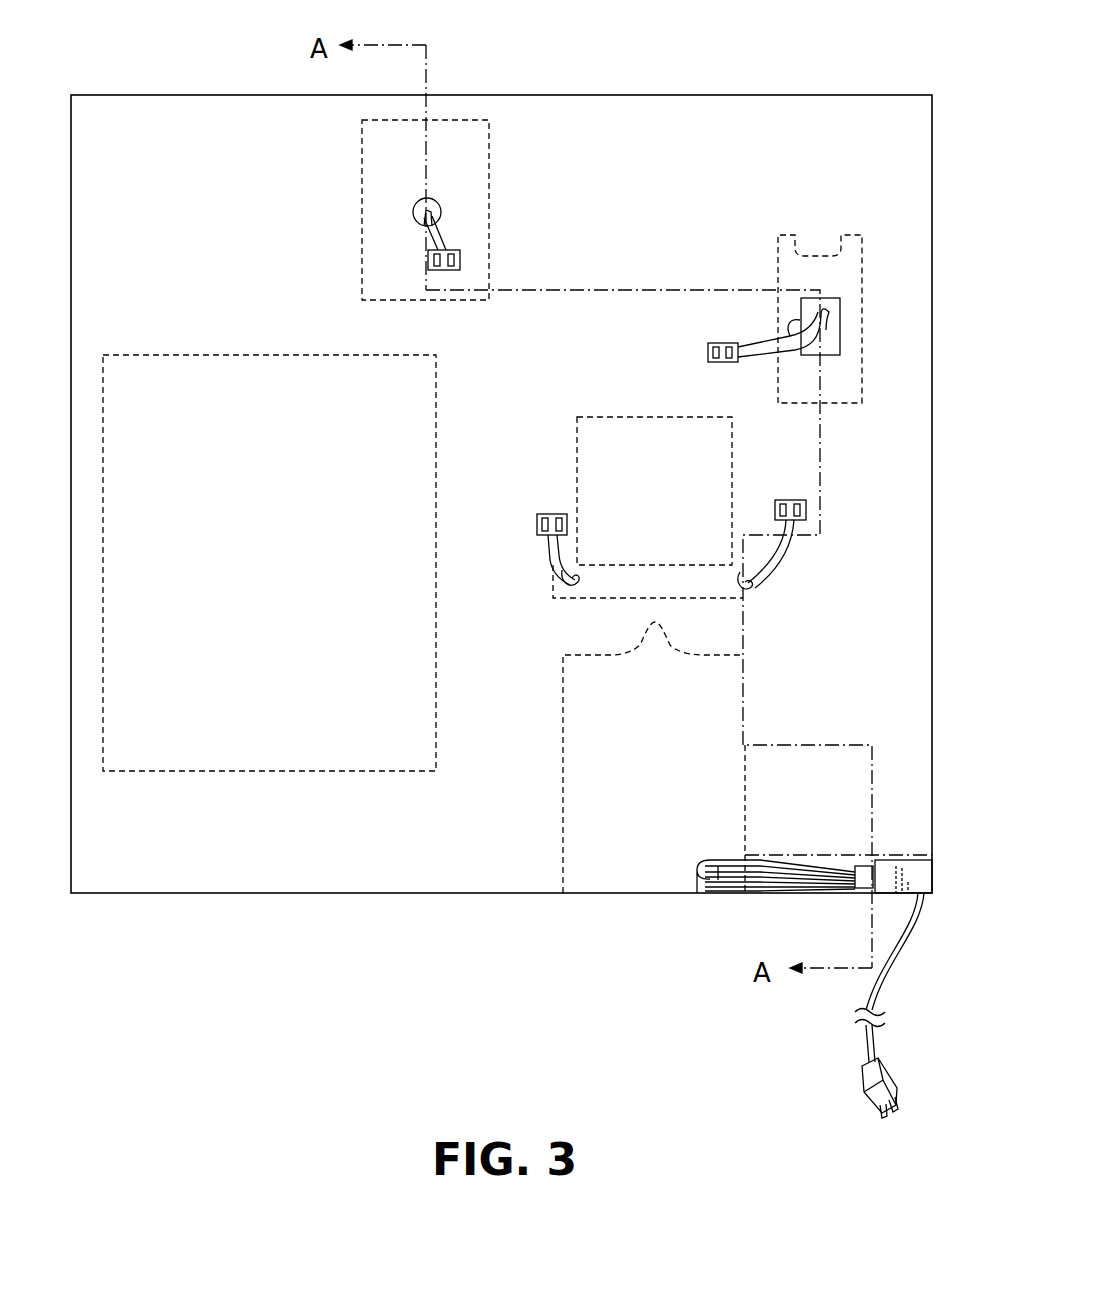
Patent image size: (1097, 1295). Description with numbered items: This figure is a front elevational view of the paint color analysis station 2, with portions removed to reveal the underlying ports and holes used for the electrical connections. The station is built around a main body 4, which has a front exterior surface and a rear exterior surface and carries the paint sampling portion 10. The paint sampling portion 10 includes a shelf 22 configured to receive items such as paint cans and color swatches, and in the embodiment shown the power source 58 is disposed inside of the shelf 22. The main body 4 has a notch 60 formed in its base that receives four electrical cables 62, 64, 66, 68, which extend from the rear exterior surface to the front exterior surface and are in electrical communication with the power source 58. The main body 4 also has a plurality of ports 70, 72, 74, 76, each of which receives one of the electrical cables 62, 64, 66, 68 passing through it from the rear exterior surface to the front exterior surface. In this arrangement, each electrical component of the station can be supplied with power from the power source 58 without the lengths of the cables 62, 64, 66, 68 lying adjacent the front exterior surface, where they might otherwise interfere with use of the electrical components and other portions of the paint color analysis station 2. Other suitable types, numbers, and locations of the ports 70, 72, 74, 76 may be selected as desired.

The paint color analysis station 2 is at (848, 68).
The main body 4 is at (167, 226).
The paint sampling portion 10 is at (563, 790).
The shelf 22 is at (900, 852).
The power source 58 is at (920, 860).
The notch 60 is at (700, 880).
The electrical cable 62 is at (436, 238).
The electrical cable 64 is at (770, 340).
The electrical cable 66 is at (780, 568).
The electrical cable 68 is at (545, 550).
The port 70 is at (439, 205).
The port 72 is at (840, 326).
The port 74 is at (750, 592).
The port 76 is at (568, 592).